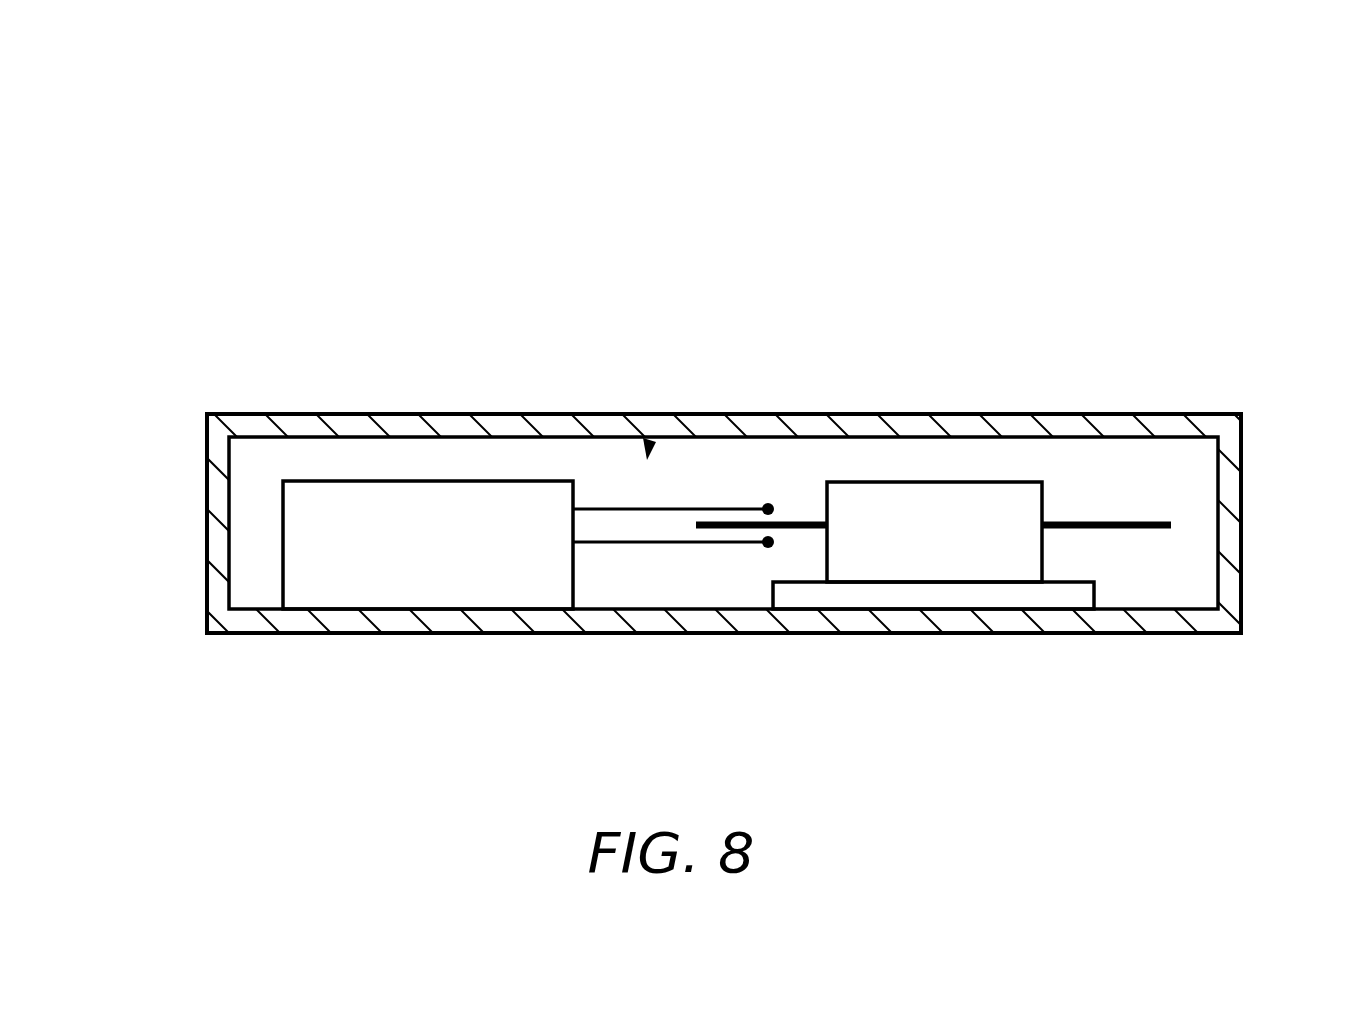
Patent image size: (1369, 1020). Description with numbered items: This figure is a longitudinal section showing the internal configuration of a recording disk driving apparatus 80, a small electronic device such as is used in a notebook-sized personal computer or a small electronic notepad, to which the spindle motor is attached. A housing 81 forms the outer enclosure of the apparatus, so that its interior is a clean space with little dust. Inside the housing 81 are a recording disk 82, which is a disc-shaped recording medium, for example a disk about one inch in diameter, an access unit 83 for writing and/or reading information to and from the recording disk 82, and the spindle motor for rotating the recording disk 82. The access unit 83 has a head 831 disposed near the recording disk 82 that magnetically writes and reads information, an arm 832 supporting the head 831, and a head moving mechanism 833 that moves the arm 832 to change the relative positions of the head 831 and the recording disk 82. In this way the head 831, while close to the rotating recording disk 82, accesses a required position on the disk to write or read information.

The recording disk driving apparatus 80 is at (322, 83).
The housing 81 is at (642, 633).
The recording disk 82 is at (1102, 528).
The access unit 83 is at (650, 440).
The head 831 is at (768, 509).
The arm 832 is at (630, 507).
The head moving mechanism 833 is at (295, 557).